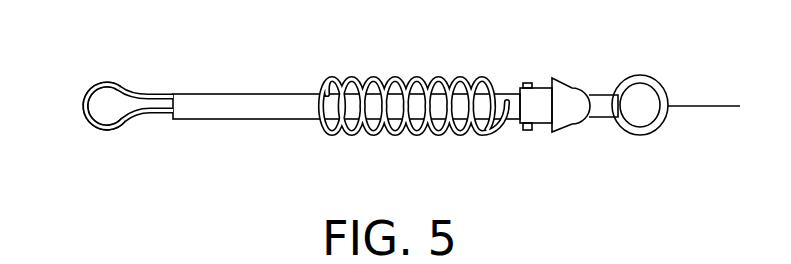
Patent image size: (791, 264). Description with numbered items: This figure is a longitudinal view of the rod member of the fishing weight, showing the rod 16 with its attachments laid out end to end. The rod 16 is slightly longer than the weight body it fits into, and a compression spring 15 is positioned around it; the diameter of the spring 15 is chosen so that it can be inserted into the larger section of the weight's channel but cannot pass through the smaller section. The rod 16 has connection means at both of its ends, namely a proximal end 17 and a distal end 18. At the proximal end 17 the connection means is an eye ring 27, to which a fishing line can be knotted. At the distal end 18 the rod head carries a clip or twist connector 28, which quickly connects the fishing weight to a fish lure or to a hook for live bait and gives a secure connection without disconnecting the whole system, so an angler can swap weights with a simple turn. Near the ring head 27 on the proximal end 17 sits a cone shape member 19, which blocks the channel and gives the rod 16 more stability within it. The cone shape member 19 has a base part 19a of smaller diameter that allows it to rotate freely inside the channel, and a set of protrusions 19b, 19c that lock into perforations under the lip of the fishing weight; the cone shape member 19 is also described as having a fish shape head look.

The compression spring 15 is at (408, 78).
The rod 16 is at (290, 93).
The proximal end 17 is at (591, 91).
The distal end 18 is at (110, 112).
The cone shape member 19 is at (566, 84).
The base part 19a is at (516, 123).
The protrusion 19b is at (528, 83).
The protrusion 19c is at (529, 131).
The eye ring 27 is at (628, 138).
The clip or twist connector 28 is at (85, 122).